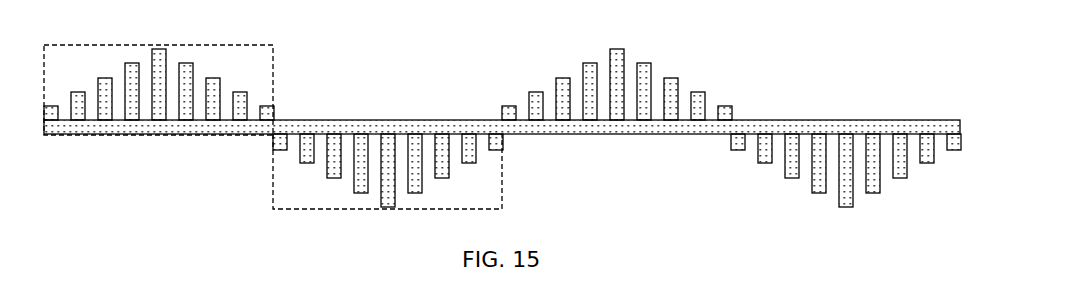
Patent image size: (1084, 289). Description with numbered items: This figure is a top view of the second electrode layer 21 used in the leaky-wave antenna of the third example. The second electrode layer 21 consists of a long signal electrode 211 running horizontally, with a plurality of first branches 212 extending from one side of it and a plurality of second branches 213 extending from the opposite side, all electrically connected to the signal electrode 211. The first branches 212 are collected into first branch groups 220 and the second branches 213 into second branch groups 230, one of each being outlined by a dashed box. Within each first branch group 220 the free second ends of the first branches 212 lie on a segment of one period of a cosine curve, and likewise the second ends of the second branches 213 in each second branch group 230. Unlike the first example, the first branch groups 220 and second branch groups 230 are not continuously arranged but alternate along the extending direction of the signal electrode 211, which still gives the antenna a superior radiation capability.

The second electrode layer 21 is at (502, 128).
The signal electrode 211 is at (752, 128).
The first branch 212 is at (733, 108).
The second branch 213 is at (793, 146).
The first branch group 220 is at (273, 88).
The second branch group 230 is at (502, 178).